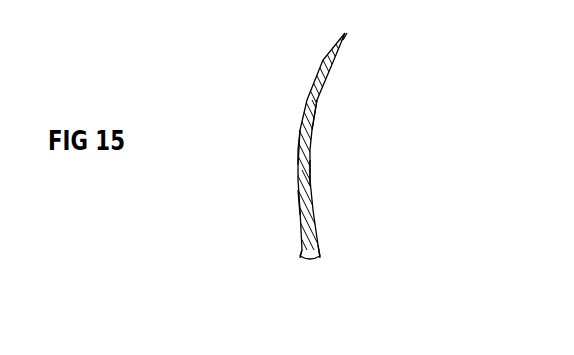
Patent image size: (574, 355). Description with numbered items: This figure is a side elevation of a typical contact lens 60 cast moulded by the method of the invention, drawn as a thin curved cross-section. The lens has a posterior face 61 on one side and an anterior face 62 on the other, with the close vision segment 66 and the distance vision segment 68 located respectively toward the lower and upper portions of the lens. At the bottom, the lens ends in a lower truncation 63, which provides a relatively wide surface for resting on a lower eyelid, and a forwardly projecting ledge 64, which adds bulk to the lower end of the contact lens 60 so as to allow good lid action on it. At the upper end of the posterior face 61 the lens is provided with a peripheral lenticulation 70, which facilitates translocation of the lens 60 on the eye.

The contact lens 60 is at (307, 110).
The peripheral lenticulation 70 is at (344, 40).
The distance vision segment 68 is at (310, 135).
The anterior face 62 is at (297, 165).
The posterior face 61 is at (310, 178).
The close vision segment 66 is at (297, 215).
The forwardly projecting ledge 64 is at (300, 260).
The lower truncation 63 is at (313, 262).